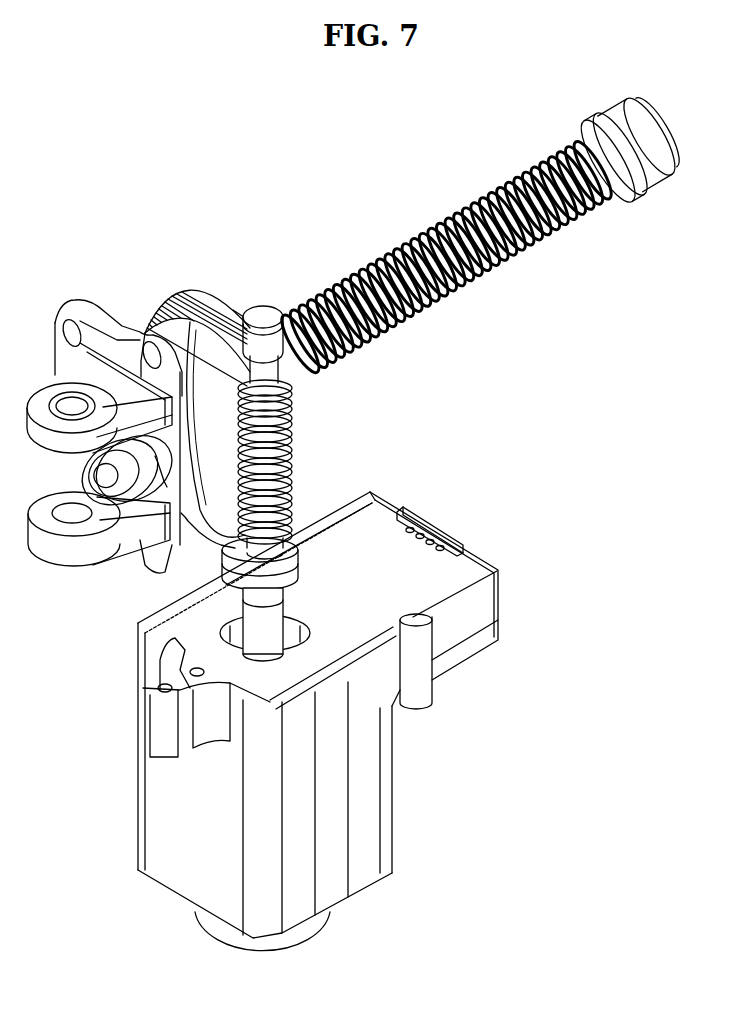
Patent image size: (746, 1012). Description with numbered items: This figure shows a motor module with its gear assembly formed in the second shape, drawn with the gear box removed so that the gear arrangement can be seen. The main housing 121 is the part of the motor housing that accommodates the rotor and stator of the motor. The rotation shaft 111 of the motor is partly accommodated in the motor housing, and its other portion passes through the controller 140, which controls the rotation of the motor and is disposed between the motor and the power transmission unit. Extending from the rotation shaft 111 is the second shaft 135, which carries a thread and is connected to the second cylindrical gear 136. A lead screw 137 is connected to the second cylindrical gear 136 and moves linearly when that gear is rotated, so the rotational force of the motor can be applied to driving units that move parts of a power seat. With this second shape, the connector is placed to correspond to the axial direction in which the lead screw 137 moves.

The rotation shaft 111 is at (245, 604).
The main housing 121 is at (170, 798).
The second shaft 135 is at (293, 480).
The second cylindrical gear 136 is at (203, 318).
The lead screw 137 is at (395, 249).
The controller 140 is at (442, 572).